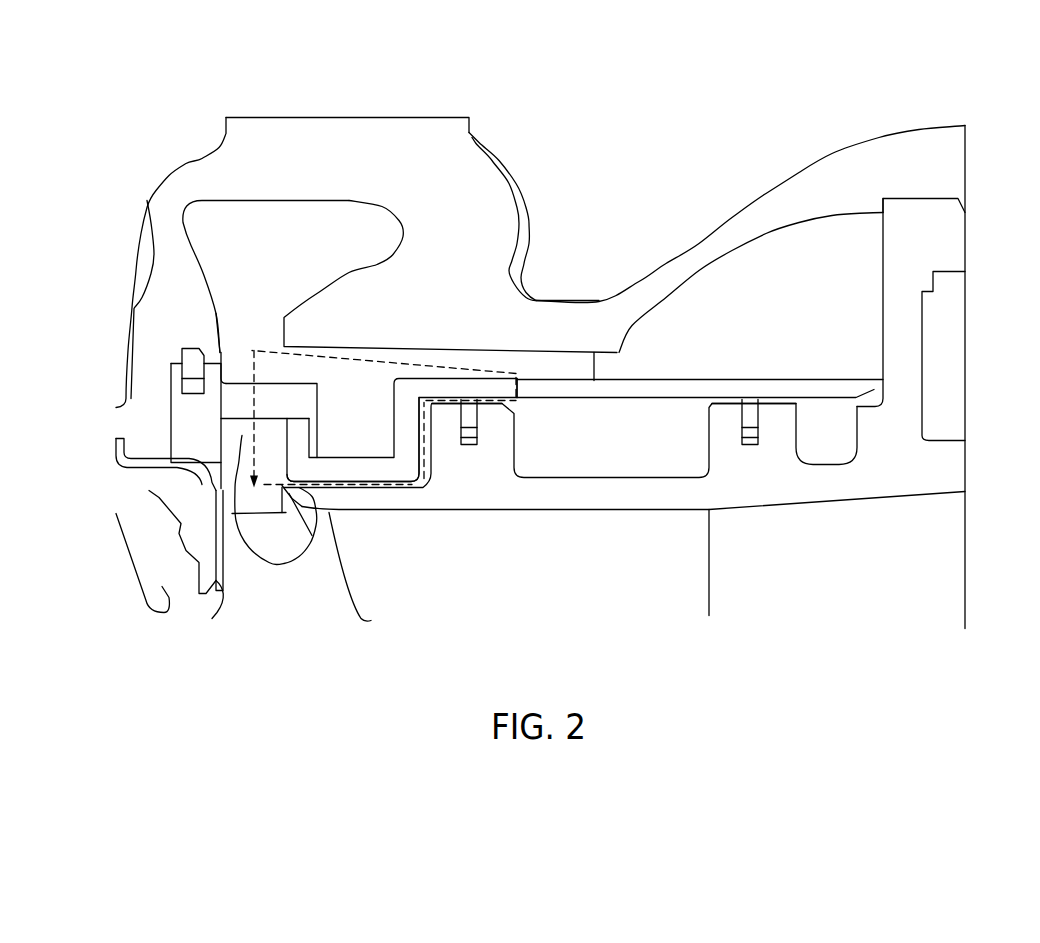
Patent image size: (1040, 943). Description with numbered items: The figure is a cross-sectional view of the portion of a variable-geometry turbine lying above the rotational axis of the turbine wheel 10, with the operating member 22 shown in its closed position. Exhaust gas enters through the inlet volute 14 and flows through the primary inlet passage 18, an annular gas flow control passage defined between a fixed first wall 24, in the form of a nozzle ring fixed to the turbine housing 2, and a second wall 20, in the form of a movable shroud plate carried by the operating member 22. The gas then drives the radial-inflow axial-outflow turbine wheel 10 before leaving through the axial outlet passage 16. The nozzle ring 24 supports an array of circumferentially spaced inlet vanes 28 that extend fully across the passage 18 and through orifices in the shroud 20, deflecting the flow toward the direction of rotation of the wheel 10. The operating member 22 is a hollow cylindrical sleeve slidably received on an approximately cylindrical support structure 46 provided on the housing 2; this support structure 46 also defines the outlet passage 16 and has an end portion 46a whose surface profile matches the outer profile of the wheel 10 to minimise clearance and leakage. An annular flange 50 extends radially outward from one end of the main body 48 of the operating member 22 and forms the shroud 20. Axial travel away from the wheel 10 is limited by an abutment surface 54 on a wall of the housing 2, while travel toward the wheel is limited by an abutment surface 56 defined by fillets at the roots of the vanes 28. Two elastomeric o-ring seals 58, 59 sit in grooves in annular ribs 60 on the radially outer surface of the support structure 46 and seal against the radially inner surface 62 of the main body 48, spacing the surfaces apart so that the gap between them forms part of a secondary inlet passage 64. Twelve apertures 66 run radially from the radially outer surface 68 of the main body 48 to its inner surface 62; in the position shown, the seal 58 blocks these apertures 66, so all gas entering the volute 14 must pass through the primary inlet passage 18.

The turbine housing 2 is at (370, 153).
The turbine wheel 10 is at (245, 587).
The inlet volute 14 is at (267, 237).
The axial outlet passage 16 is at (660, 592).
The primary inlet passage 18 is at (253, 398).
The second wall 20 is at (270, 356).
The operating member 22 is at (568, 345).
The first wall 24 is at (230, 430).
The inlet vanes 28 is at (236, 490).
The support structure 46 is at (592, 495).
The end portion 46a is at (287, 487).
The main body 48 is at (625, 388).
The annular flange 50 is at (300, 427).
The abutment surface 54 is at (868, 378).
The abutment surface 56 is at (230, 365).
The o-ring seal 58 is at (470, 407).
The o-ring seal 59 is at (753, 410).
The annular ribs 60 is at (447, 418).
The radially inner surface 62 is at (668, 400).
The secondary inlet passage 64 is at (360, 477).
The apertures 66 is at (513, 380).
The radially outer surface 68 is at (595, 380).